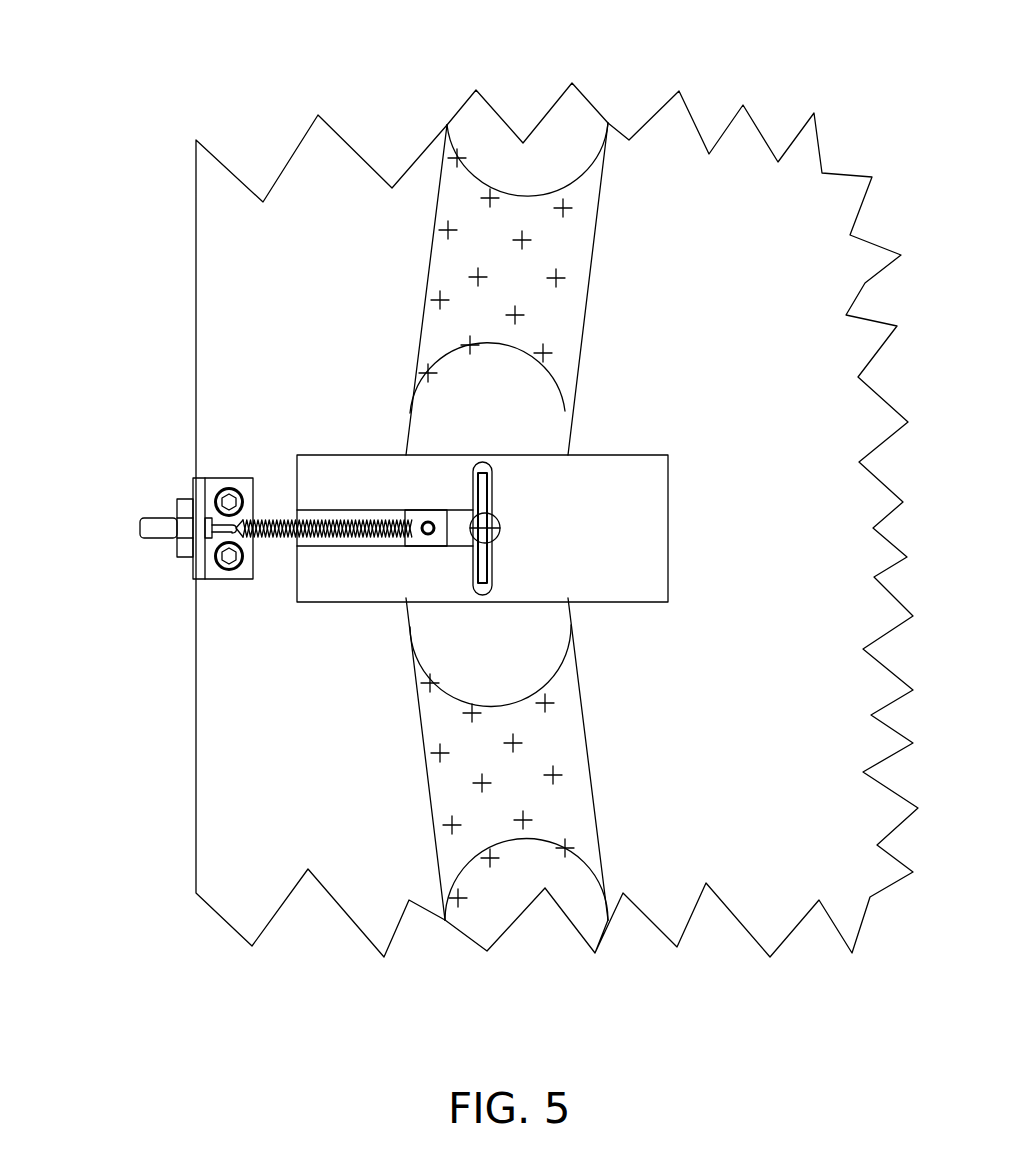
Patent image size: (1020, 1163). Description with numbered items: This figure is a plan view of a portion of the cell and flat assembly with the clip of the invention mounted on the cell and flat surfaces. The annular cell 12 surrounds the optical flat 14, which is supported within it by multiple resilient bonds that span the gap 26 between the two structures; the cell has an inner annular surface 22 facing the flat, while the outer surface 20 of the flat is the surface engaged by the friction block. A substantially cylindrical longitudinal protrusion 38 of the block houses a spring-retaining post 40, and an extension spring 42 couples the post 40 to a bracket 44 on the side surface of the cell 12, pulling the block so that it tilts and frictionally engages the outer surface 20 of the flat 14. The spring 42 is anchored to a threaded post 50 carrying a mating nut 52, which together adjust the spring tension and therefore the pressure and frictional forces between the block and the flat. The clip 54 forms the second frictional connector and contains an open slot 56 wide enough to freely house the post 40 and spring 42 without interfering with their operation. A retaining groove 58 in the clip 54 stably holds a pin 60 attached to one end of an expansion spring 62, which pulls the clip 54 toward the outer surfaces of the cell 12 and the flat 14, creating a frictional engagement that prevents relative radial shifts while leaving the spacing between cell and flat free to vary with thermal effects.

The cell 12 is at (325, 185).
The optical flat 14 is at (742, 187).
The outer surface of the optical flat 20 is at (570, 418).
The inner annular surface of the cell 22 is at (408, 420).
The gap 26 is at (535, 633).
The cylindrical longitudinal protrusion 38 is at (433, 547).
The spring-retaining post 40 is at (421, 523).
The extension spring 42 is at (280, 540).
The bracket 44 is at (212, 487).
The threaded post 50 is at (152, 520).
The nut 52 is at (187, 503).
The clip 54 is at (672, 502).
The open slot 56 is at (295, 513).
The retaining groove 58 is at (490, 482).
The pin 60 is at (487, 563).
The expansion spring 62 is at (490, 512).